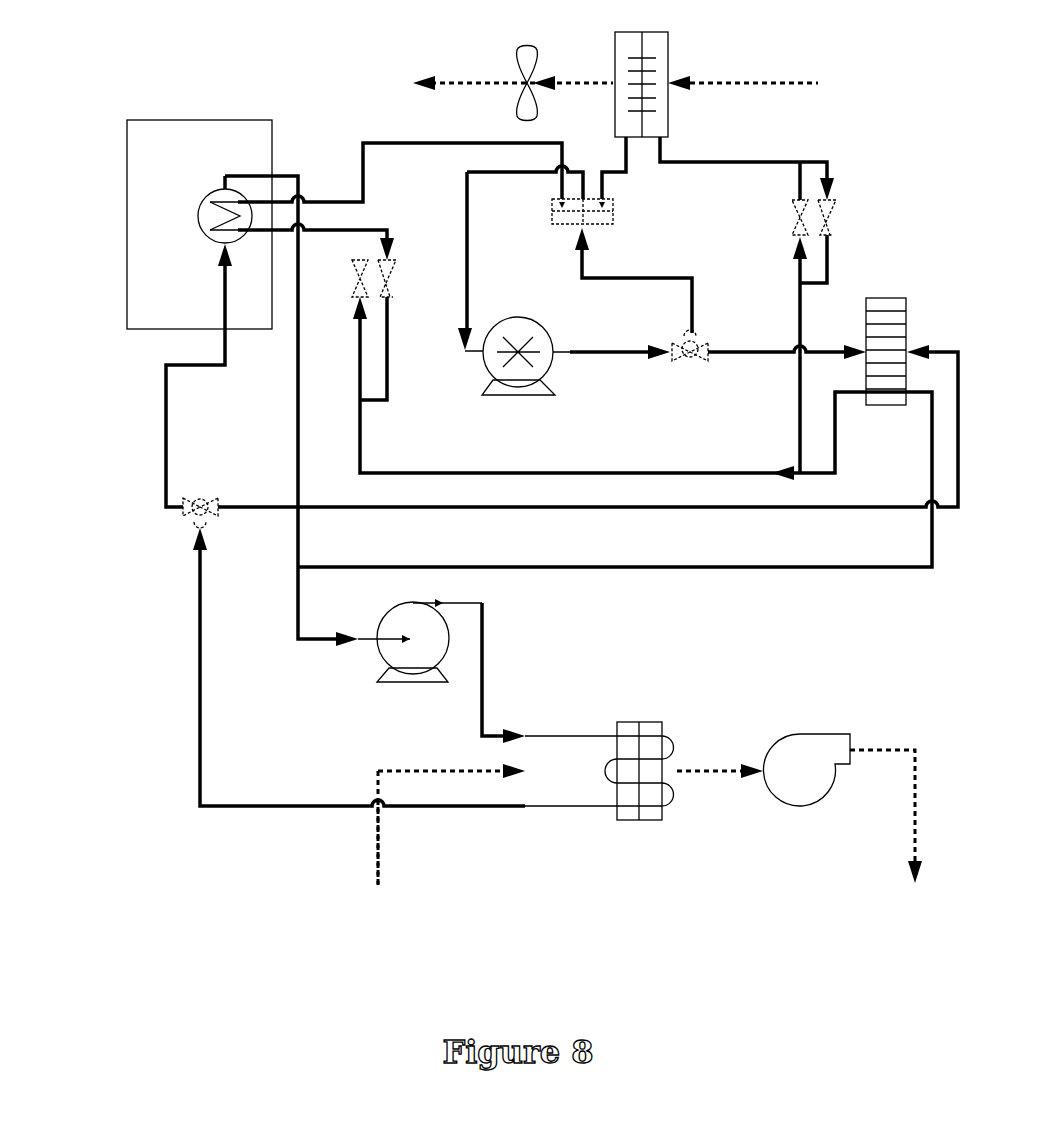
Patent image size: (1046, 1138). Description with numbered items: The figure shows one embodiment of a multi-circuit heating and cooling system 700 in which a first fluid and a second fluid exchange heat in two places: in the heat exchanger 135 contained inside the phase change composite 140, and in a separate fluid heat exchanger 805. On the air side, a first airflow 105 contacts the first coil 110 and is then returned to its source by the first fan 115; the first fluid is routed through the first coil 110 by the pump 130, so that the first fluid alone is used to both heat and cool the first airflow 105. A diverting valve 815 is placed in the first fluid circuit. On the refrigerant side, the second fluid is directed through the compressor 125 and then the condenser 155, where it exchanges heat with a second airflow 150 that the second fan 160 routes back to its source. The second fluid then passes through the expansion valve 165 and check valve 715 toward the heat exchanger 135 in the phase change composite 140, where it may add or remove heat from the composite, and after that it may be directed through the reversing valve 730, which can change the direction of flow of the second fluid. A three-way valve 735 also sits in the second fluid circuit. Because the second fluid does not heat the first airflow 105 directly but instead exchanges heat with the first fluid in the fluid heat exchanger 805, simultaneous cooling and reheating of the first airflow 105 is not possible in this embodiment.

The first airflow 105 is at (377, 865).
The first coil 110 is at (599, 791).
The first fan 115 is at (807, 790).
The compressor 125 is at (517, 381).
The pump 130 is at (420, 658).
The heat exchanger 135 is at (199, 220).
The phase change composite 140 is at (199, 208).
The second airflow 150 is at (778, 85).
The condenser 155 is at (641, 68).
The second fan 160 is at (527, 69).
The expansion valve 165 is at (555, 248).
The multi-circuit heating and cooling system 700 is at (162, 839).
The check valve 715 is at (632, 248).
The reversing valve 730 is at (614, 210).
The three-way valve 735 is at (690, 362).
The fluid heat exchanger 805 is at (886, 366).
The diverting valve 815 is at (207, 494).